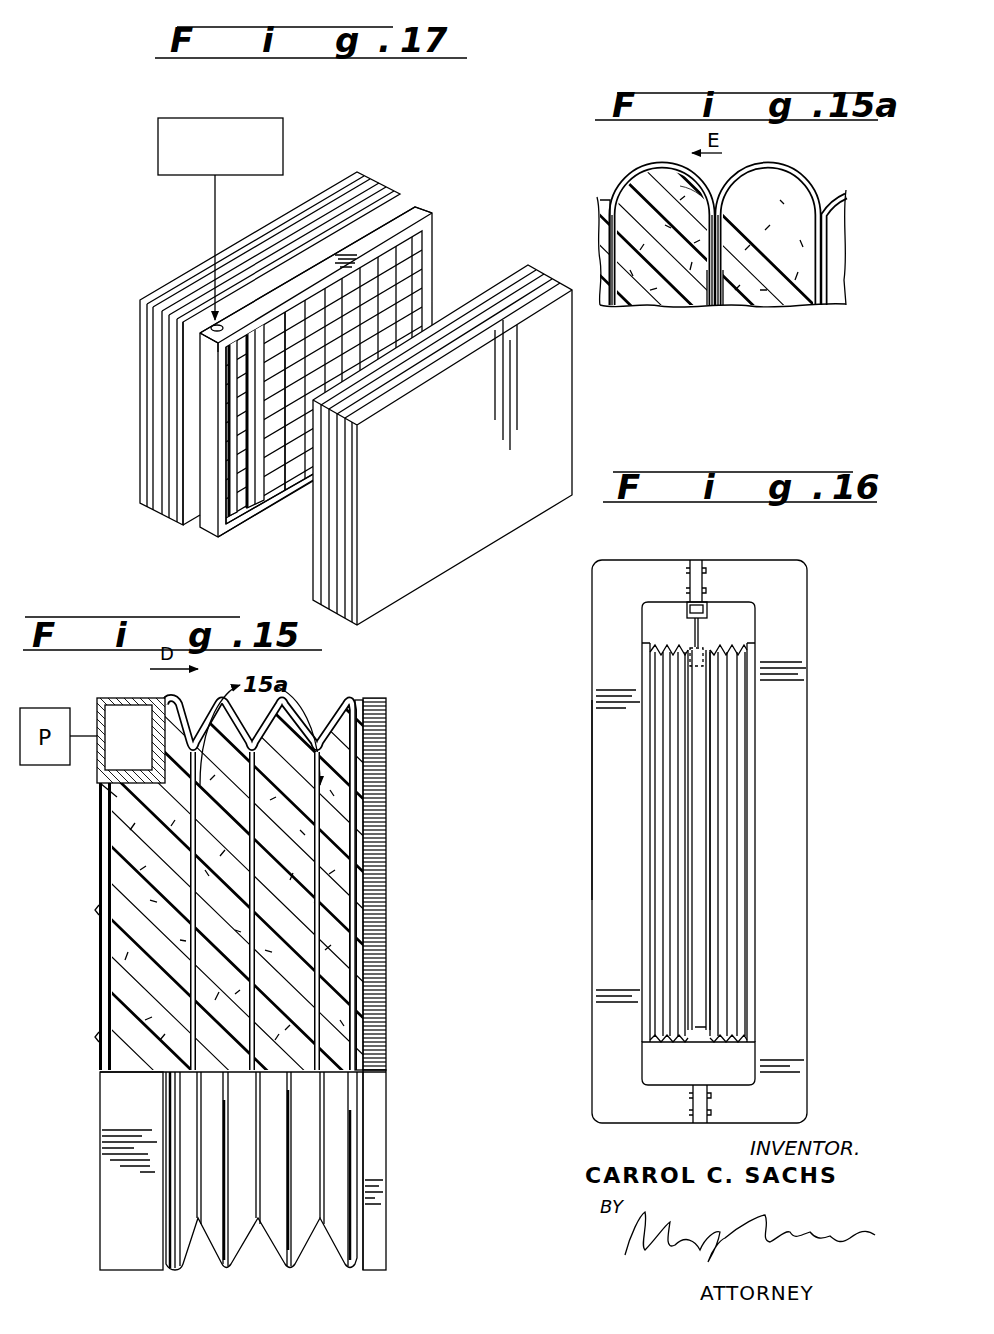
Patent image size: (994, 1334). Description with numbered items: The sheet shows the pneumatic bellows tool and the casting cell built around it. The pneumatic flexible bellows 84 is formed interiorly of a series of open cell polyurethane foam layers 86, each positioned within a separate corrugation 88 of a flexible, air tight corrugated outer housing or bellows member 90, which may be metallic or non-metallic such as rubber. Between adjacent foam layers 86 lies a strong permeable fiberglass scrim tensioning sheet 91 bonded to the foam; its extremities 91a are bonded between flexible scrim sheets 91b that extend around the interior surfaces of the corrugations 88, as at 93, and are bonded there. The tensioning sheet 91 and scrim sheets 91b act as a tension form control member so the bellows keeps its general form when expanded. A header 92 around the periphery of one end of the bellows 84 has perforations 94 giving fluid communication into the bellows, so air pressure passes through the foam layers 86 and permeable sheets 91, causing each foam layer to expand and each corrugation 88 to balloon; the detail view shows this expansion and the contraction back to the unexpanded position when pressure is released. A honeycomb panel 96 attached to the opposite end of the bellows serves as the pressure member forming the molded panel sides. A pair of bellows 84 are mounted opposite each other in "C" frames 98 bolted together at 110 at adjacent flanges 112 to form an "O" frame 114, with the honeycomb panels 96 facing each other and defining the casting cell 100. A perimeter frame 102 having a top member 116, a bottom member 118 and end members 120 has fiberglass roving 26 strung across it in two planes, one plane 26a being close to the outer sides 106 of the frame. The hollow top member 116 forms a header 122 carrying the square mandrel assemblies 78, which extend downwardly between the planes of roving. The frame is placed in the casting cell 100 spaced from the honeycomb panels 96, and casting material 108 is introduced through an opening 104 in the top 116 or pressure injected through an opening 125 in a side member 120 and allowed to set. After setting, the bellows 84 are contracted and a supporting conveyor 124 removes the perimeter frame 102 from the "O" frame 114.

In FIG. 17, the fiberglass roving 26 is at (410, 282).
In FIG. 17, the plane of roving 26a is at (412, 320).
In FIG. 17, the square mandrel assemblies 78 is at (263, 500).
In FIG. 17, the pneumatic flexible bellows 84 is at (148, 348).
In FIG. 15a, the pneumatic flexible bellows 84 is at (622, 186).
In FIG. 16, the pneumatic flexible bellows 84 is at (646, 636).
In FIG. 15, the pneumatic flexible bellows 84 is at (412, 678).
In FIG. 15a, the open cell flexible plastic foam layers 86 is at (808, 194).
In FIG. 15, the open cell flexible plastic foam layers 86 is at (230, 972).
In FIG. 15a, the corrugation 88 is at (636, 178).
In FIG. 15, the corrugation 88 is at (330, 1157).
In FIG. 15a, the corrugated outer housing or bellows member 90 is at (618, 192).
In FIG. 15, the corrugated outer housing or bellows member 90 is at (182, 698).
In FIG. 15a, the tensioning sheet 91 is at (700, 305).
In FIG. 15, the tensioning sheet 91 is at (258, 826).
In FIG. 15a, the extremities of tensioning sheet 91a is at (728, 298).
In FIG. 15a, the flexible scrim sheets 91b is at (695, 292).
In FIG. 15, the header 92 is at (98, 702).
In FIG. 15a, the scrim sheet extension around corrugation interior 93 is at (683, 190).
In FIG. 15, the perforations or holes 94 is at (128, 737).
In FIG. 17, the honeycomb panel 96 is at (197, 513).
In FIG. 16, the honeycomb panel 96 is at (714, 760).
In FIG. 15, the honeycomb panel 96 is at (374, 1005).
In FIG. 16, the "C" frame 98 is at (630, 538).
In FIG. 16, the casting cell 100 is at (703, 716).
In FIG. 17, the perimeter frame 102 is at (477, 200).
In FIG. 16, the perimeter frame 102 is at (702, 850).
In FIG. 17, the opening 104 is at (205, 337).
In FIG. 17, the outer sides of perimeter frame 106 is at (290, 500).
In FIG. 16, the outer sides of perimeter frame 106 is at (689, 893).
In FIG. 17, the casting material 108 is at (283, 152).
In FIG. 16, the bolts 110 is at (694, 1112).
In FIG. 16, the flanges 112 is at (712, 1103).
In FIG. 16, the "O" frame 114 is at (592, 842).
In FIG. 17, the top member 116 is at (418, 212).
In FIG. 17, the bottom member 118 is at (278, 503).
In FIG. 17, the end members 120 is at (432, 293).
In FIG. 17, the header 122 is at (400, 220).
In FIG. 16, the header 122 is at (686, 660).
In FIG. 16, the supporting conveyor 124 is at (707, 607).
In FIG. 17, the opening 125 is at (200, 503).